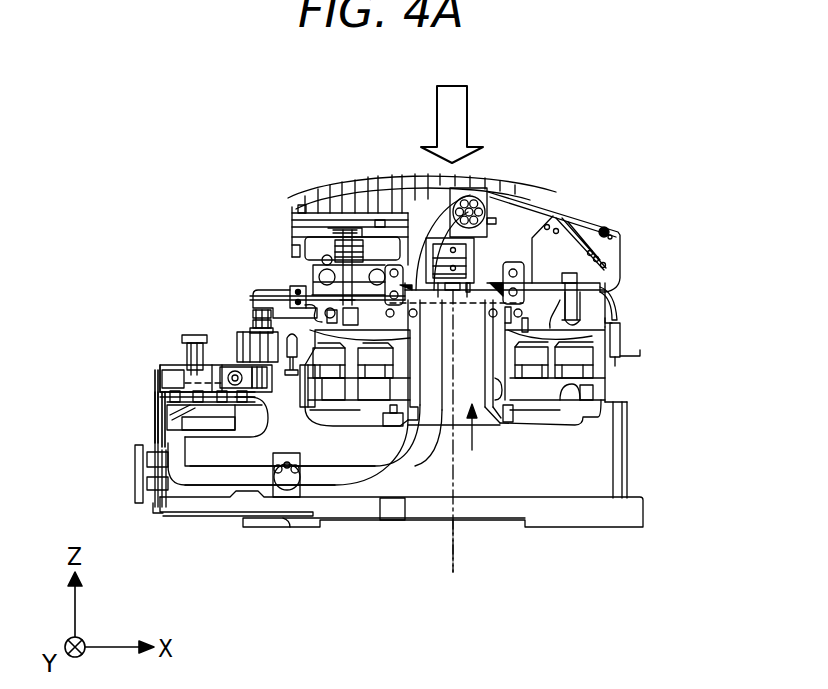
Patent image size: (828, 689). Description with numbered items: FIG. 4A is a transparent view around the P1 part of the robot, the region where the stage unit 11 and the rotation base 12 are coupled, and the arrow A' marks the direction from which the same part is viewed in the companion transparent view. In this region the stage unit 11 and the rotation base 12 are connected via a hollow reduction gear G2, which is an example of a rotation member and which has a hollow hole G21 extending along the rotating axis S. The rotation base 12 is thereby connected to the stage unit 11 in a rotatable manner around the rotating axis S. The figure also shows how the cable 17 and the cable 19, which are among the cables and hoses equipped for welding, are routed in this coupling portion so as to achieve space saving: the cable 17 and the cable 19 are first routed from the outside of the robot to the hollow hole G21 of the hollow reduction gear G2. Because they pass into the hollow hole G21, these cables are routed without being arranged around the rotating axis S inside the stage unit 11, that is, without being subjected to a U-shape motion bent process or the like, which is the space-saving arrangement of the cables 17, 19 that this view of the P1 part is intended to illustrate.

The P1 part P1 is at (240, 174).
The arrow A' is at (452, 109).
The rotation base 12 is at (623, 249).
The hollow reduction gear G2 is at (608, 388).
The stage unit 11 is at (628, 452).
The cable 17 is at (352, 485).
The cable 19 is at (367, 568).
The hollow hole G21 is at (472, 450).
The rotating axis S is at (453, 557).